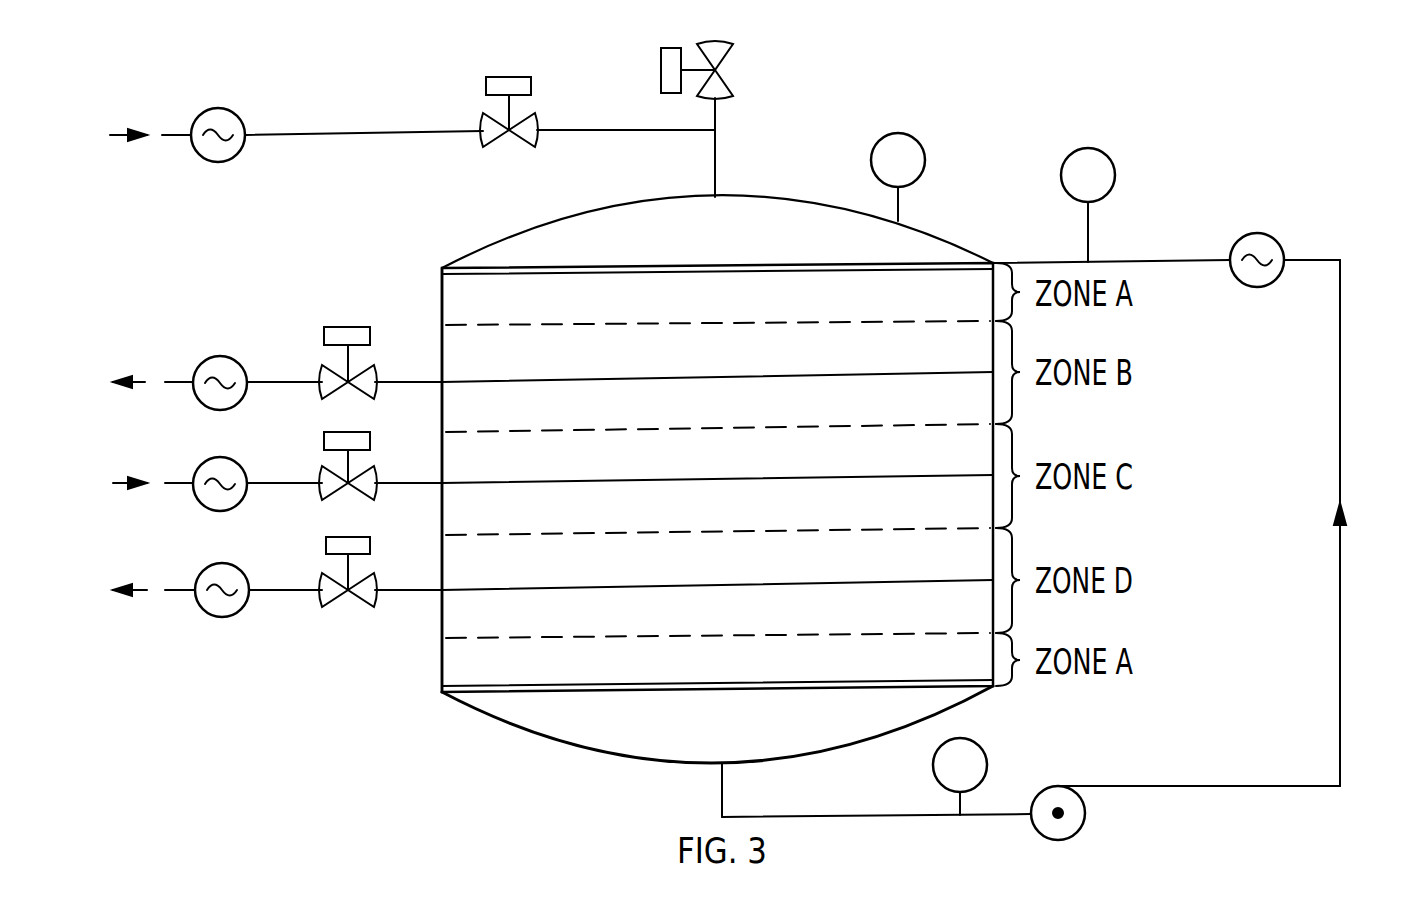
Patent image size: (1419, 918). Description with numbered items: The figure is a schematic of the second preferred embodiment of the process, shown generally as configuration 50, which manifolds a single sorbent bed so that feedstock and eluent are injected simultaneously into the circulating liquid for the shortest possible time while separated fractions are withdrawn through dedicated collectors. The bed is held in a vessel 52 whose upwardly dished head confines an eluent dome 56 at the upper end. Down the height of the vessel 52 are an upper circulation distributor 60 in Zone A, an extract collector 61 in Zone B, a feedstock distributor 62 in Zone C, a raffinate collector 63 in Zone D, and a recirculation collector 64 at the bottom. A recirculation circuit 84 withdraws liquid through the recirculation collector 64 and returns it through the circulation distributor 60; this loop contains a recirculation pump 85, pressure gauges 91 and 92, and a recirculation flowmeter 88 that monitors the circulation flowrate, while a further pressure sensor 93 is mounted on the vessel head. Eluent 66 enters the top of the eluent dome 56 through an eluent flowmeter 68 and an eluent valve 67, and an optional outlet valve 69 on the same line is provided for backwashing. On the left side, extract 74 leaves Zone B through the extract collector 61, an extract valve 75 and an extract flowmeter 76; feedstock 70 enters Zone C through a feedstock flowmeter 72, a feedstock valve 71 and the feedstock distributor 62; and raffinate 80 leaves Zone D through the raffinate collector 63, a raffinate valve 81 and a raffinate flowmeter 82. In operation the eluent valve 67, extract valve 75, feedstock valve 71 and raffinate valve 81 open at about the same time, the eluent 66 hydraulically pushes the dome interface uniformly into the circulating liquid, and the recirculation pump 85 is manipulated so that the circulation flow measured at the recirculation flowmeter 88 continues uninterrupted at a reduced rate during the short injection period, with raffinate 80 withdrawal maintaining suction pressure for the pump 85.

The configuration 50 is at (1012, 172).
The vessel 52 is at (442, 282).
The eluent dome 56 is at (732, 196).
The upper circulation distributor 60 is at (527, 268).
The extract collector 61 is at (485, 378).
The feedstock distributor 62 is at (485, 480).
The raffinate collector 63 is at (485, 588).
The recirculation collector 64 is at (548, 698).
The eluent 66 is at (115, 135).
The eluent valve 67 is at (487, 126).
The eluent flowmeter 68 is at (220, 112).
The outlet valve 69 is at (735, 54).
The feedstock 70 is at (117, 483).
The feedstock valve 71 is at (325, 480).
The feedstock flowmeter 72 is at (210, 465).
The extract 74 is at (143, 380).
The extract valve 75 is at (325, 377).
The extract flowmeter 76 is at (210, 362).
The raffinate 80 is at (147, 592).
The raffinate valve 81 is at (325, 585).
The raffinate flowmeter 82 is at (211, 572).
The recirculation circuit 84 is at (1341, 640).
The recirculation pump 85 is at (1085, 822).
The recirculation flowmeter 88 is at (1268, 240).
The pressure gauge 91 is at (972, 748).
The pressure gauge 92 is at (1104, 158).
The pressure sensor 93 is at (916, 145).